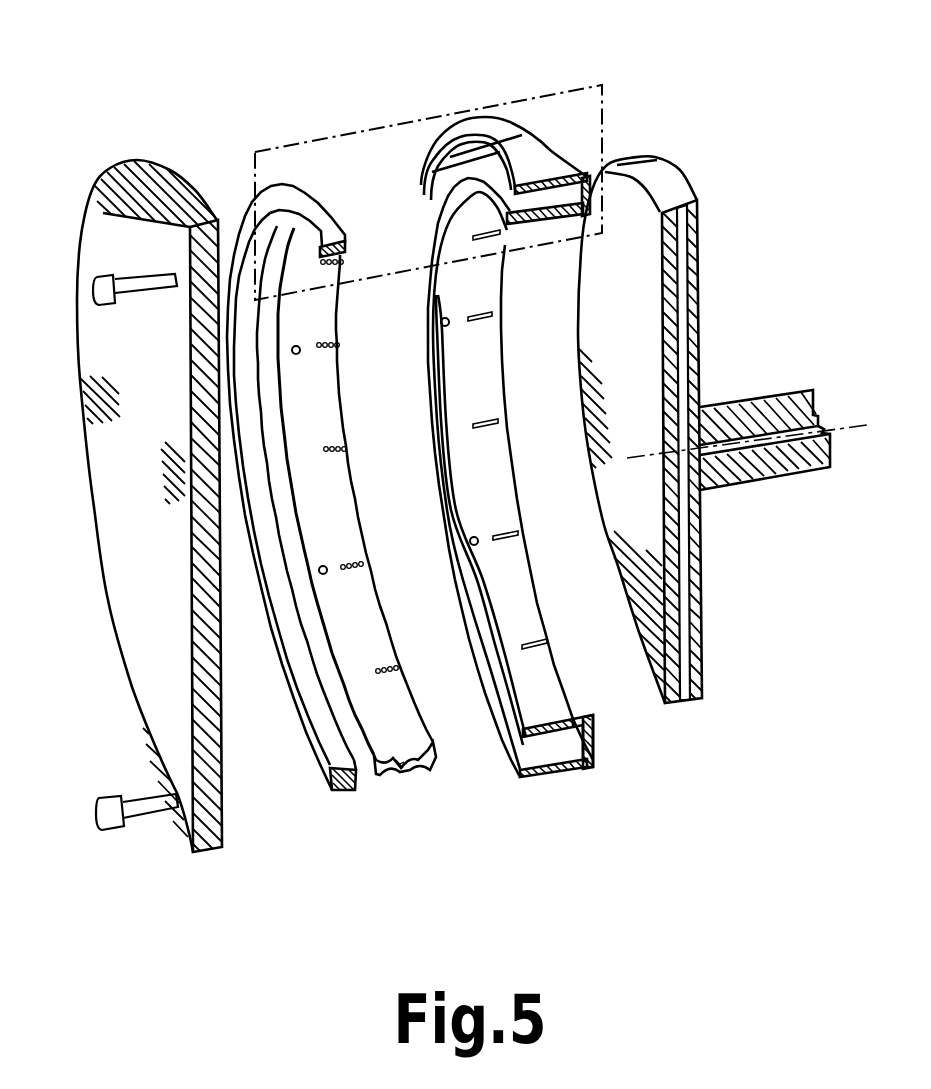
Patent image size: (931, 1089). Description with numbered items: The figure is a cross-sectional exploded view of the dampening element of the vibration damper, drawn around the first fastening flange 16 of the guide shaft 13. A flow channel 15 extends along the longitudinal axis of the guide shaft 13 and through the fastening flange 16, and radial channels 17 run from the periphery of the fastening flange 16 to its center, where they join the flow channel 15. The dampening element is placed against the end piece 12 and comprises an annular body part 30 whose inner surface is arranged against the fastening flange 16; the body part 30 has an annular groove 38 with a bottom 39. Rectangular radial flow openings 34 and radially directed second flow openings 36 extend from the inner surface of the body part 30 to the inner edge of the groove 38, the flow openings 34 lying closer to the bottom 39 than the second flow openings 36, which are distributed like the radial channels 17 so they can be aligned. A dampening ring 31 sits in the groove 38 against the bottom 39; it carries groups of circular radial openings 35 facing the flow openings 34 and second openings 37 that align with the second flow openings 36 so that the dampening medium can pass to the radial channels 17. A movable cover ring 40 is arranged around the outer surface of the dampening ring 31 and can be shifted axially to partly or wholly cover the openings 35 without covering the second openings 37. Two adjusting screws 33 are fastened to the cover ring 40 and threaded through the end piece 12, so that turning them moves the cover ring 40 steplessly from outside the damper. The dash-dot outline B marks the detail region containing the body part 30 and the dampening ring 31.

The second end piece 12 is at (180, 183).
The adjusting screws 33 is at (98, 280).
The detail region B is at (605, 118).
The dampening ring 31 is at (357, 200).
The annular body part 30 is at (528, 172).
The cover ring 40 is at (318, 722).
The radial openings 35 is at (393, 660).
The second flow openings 36 is at (441, 325).
The second openings 37 is at (327, 569).
The annular groove 38 is at (543, 757).
The bottom of the groove 39 is at (593, 743).
The radial flow openings 34 is at (483, 418).
The first fastening flange 16 is at (683, 190).
The radial channels 17 is at (685, 665).
The flow channel 15 is at (797, 432).
The guide shaft 13 is at (800, 455).